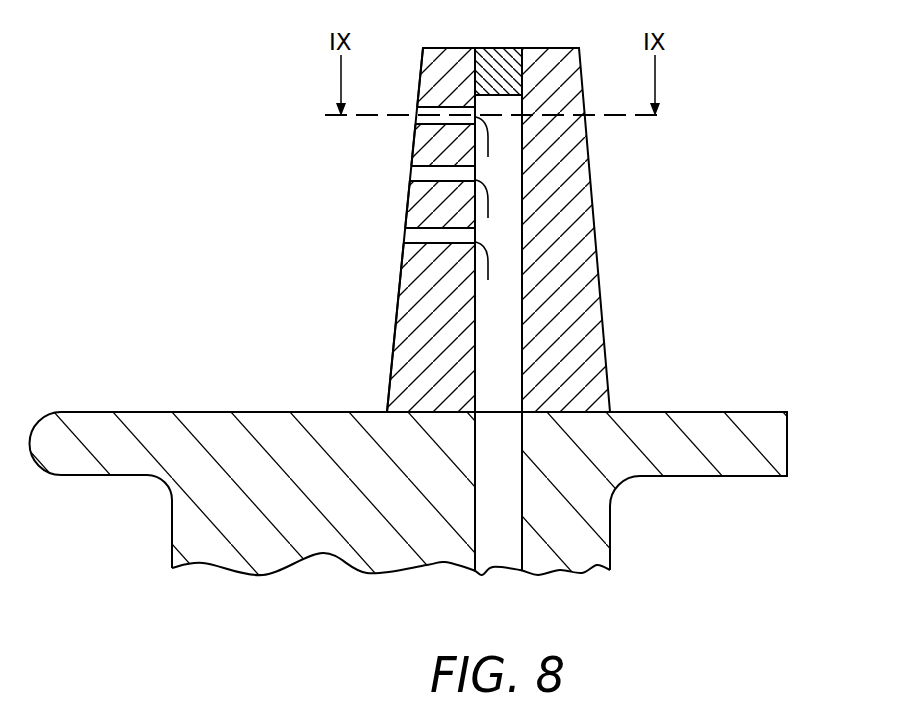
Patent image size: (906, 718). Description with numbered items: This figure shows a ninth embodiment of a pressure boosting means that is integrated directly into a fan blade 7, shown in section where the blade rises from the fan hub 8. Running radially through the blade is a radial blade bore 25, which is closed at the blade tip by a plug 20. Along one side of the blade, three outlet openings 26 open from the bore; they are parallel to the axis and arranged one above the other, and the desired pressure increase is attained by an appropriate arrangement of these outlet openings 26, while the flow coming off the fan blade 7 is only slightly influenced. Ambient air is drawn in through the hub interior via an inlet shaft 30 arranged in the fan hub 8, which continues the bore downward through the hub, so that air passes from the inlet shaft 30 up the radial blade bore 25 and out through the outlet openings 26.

The fan blade 7 is at (582, 352).
The fan hub 8 is at (226, 428).
The plug 20 is at (500, 58).
The radial blade bore 25 is at (510, 174).
The outlet openings 26 is at (412, 176).
The inlet shaft 30 is at (490, 560).